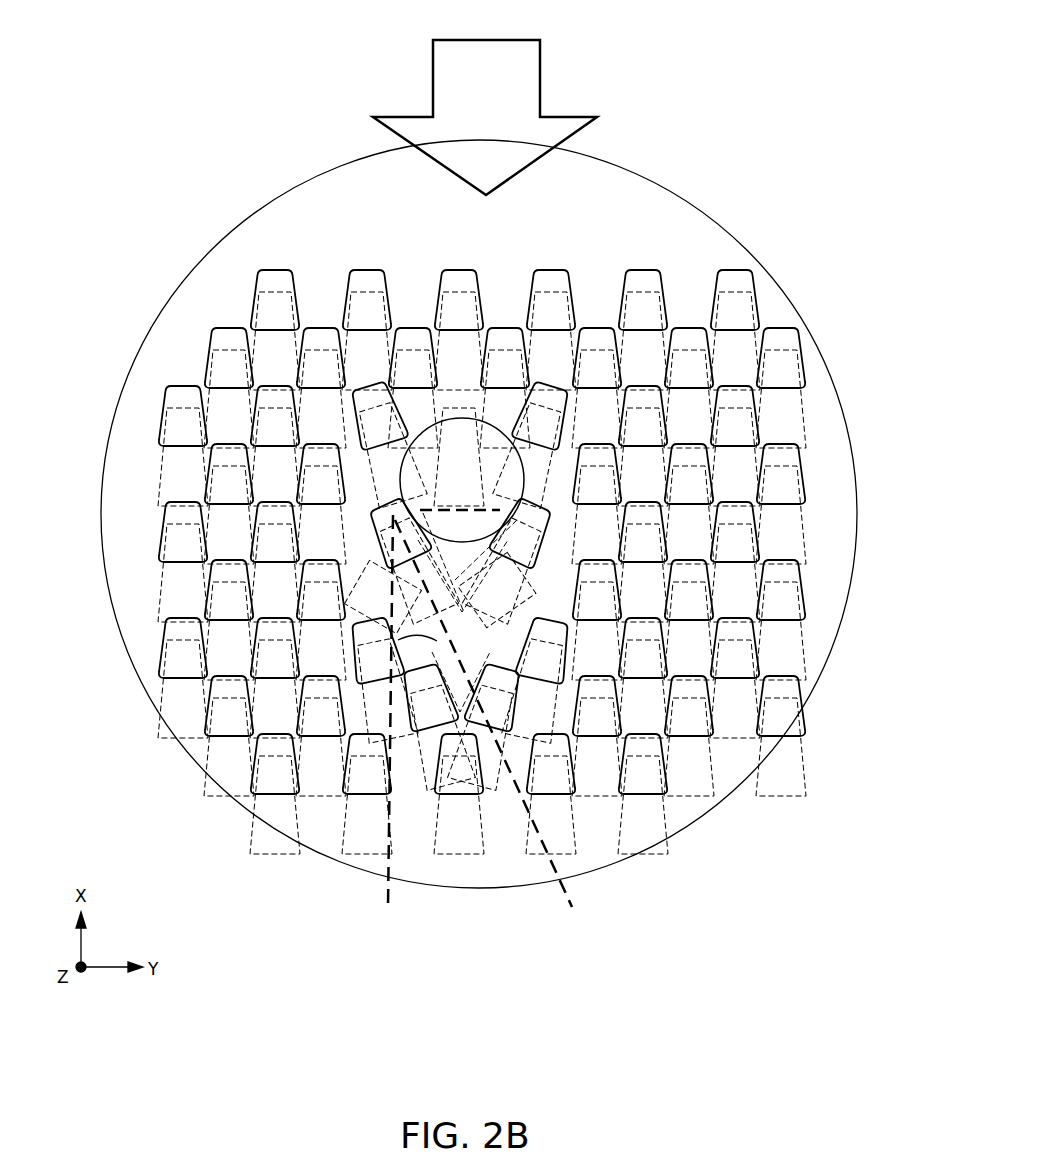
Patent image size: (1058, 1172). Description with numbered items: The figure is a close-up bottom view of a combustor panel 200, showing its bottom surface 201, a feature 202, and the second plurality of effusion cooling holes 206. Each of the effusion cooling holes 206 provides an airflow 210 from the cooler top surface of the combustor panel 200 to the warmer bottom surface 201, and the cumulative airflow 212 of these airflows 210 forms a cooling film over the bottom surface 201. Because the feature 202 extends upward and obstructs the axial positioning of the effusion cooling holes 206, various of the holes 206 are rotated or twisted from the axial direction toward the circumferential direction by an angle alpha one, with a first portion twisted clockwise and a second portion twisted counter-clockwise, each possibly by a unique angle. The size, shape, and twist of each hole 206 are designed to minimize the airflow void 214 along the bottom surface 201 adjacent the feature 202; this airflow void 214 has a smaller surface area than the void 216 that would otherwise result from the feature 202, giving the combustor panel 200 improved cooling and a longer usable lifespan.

The combustor panel 200 is at (173, 207).
The bottom surface 201 is at (108, 497).
The feature 202 is at (481, 470).
The second plurality of effusion cooling holes 206 is at (826, 360).
The airflow 210 is at (827, 425).
The cumulative airflow 212 is at (497, 108).
The airflow void 214 is at (455, 565).
The void 216 is at (488, 652).